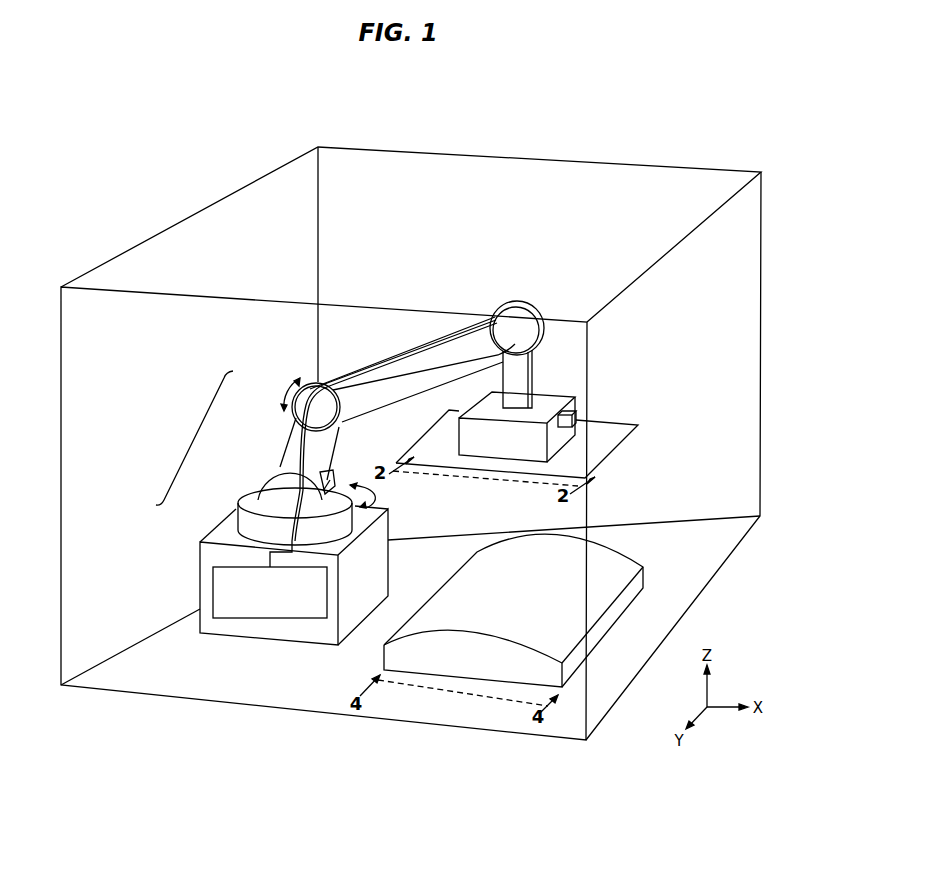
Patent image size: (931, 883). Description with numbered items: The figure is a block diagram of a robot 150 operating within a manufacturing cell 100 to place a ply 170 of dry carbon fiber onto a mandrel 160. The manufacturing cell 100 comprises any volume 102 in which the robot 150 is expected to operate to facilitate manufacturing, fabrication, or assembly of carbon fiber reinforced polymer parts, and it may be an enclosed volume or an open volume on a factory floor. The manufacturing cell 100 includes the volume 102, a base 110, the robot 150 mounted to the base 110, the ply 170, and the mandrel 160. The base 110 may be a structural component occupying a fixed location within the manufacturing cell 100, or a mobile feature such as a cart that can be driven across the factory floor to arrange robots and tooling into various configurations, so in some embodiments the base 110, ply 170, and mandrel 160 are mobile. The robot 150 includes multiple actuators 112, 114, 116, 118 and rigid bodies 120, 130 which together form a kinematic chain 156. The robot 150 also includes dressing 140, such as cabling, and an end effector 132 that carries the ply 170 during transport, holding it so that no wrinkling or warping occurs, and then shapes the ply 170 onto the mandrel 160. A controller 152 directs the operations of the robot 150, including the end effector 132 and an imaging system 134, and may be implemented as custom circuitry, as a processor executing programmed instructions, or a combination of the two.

The manufacturing cell 100 is at (395, 152).
The volume 102 is at (724, 532).
The base 110 is at (318, 575).
The actuator 112 is at (238, 507).
The actuator 114 is at (267, 482).
The actuator 116 is at (383, 362).
The actuator 118 is at (535, 365).
The rigid body 120 is at (288, 442).
The rigid body 130 is at (412, 348).
The end effector 132 is at (478, 408).
The imaging system 134 is at (580, 417).
The dressing 140 is at (394, 430).
The robot 150 is at (170, 544).
The controller 152 is at (258, 614).
The kinematic chain 156 is at (196, 427).
The mandrel 160 is at (600, 572).
The ply 170 is at (605, 447).